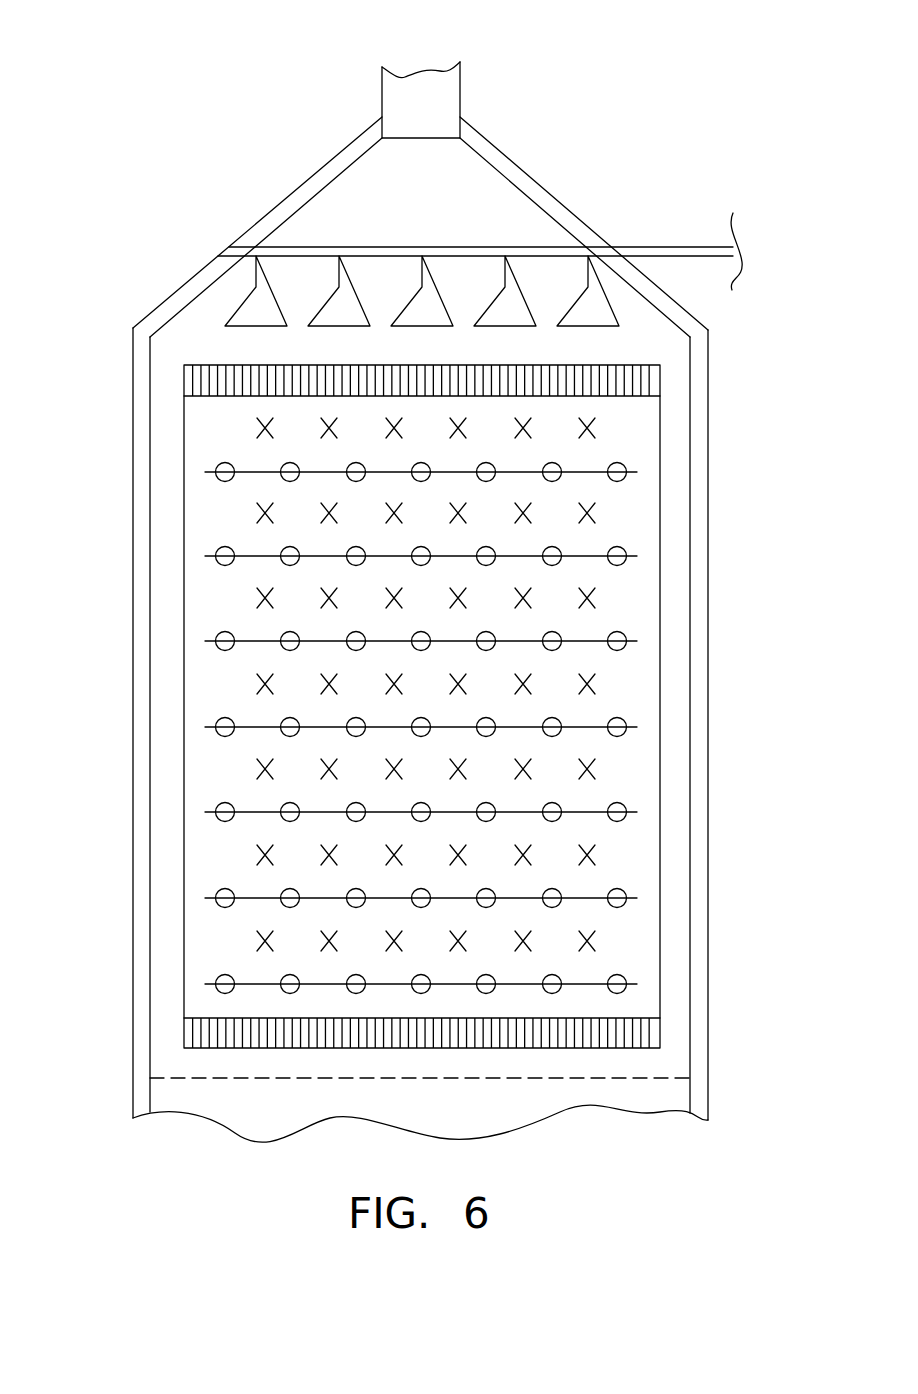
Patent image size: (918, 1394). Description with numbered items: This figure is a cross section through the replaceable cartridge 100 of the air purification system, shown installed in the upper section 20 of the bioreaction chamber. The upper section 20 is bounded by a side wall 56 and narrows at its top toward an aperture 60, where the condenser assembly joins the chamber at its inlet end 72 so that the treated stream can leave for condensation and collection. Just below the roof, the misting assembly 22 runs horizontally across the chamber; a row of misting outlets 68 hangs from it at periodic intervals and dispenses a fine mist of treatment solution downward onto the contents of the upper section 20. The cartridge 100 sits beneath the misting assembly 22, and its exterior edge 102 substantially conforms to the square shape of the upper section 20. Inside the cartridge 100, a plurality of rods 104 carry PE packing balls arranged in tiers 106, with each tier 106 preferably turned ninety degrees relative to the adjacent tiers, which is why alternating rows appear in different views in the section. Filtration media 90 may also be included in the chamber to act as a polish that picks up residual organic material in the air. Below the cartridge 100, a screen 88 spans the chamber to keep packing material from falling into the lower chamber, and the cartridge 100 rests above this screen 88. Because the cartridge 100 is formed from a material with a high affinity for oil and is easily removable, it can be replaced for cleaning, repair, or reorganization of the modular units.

The upper section 20 is at (165, 163).
The misting assembly 22 is at (643, 247).
The side wall 56 is at (133, 536).
The aperture 60 is at (437, 138).
The misting outlets 68 is at (247, 310).
The inlet end 72 is at (382, 98).
The screen 88 is at (653, 1078).
The filtration media 90 is at (260, 851).
The replaceable cartridge 100 is at (618, 598).
The exterior edge 102 is at (660, 650).
The rods 104 is at (622, 810).
The tiers 106 is at (217, 723).